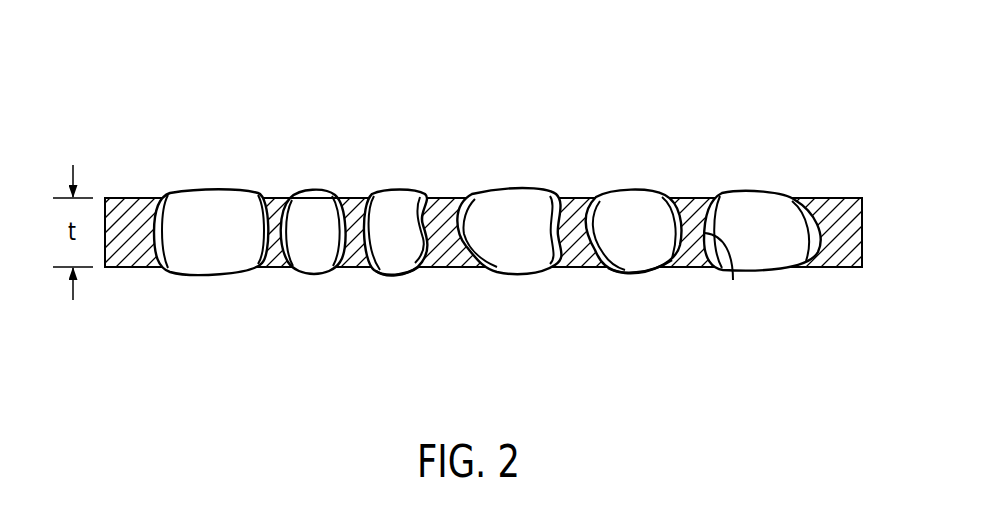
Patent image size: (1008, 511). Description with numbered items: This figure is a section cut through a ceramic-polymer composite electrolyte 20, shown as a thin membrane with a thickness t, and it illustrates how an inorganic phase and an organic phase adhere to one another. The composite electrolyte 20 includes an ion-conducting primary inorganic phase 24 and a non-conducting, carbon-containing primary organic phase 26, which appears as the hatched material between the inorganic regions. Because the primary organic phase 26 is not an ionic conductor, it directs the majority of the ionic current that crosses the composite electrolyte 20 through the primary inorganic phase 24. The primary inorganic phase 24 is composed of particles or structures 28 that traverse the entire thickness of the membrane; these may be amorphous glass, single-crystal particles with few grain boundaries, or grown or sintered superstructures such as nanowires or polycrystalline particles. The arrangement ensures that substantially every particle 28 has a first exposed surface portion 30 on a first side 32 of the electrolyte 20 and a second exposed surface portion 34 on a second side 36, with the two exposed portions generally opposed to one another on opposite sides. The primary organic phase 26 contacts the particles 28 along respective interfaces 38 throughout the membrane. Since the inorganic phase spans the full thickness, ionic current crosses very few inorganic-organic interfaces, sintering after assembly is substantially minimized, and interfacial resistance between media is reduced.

The ceramic-polymer composite electrolyte 20 is at (809, 132).
The primary inorganic phase 24 is at (212, 279).
The primary organic phase 26 is at (579, 190).
The particles or structures 28 is at (223, 242).
The first exposed surface portion 30 is at (214, 190).
The first side 32 is at (307, 157).
The second exposed surface portion 34 is at (397, 275).
The second side 36 is at (585, 303).
The interfaces 38 is at (160, 205).